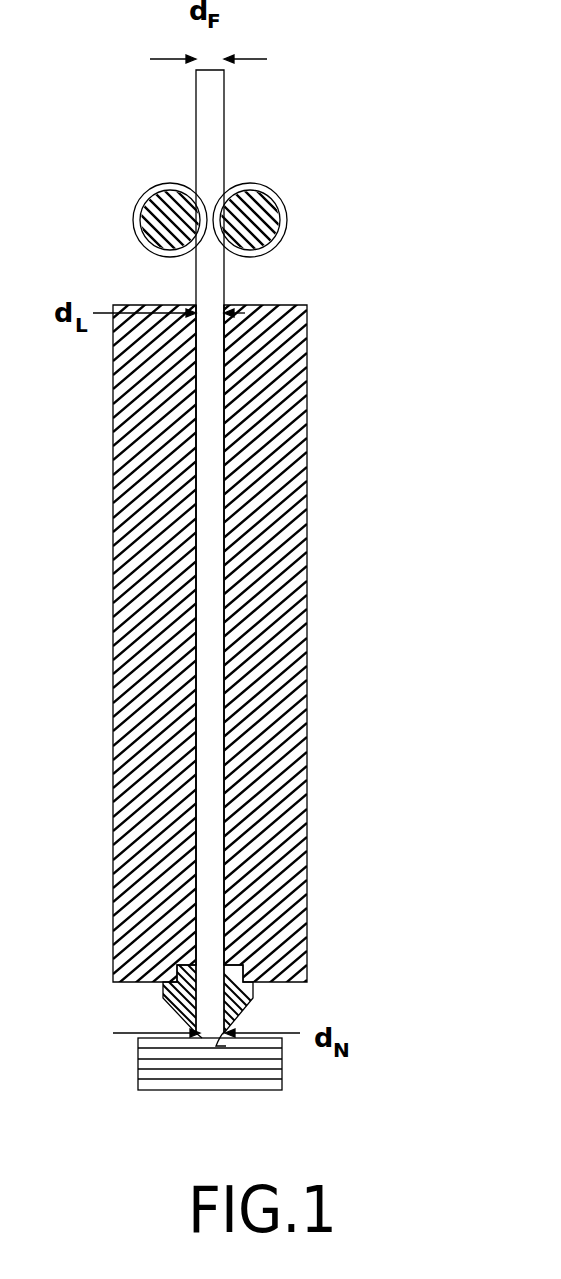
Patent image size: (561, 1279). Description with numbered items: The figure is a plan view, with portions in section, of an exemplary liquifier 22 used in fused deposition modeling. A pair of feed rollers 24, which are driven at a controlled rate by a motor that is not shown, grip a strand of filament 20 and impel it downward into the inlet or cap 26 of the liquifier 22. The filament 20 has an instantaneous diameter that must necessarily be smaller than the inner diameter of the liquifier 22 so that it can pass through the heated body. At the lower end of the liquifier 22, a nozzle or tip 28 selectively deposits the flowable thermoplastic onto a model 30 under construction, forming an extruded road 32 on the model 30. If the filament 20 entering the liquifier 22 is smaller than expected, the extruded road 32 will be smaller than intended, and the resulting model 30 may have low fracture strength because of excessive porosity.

The filament 20 is at (217, 152).
The liquifier 22 is at (280, 602).
The feed rollers 24 is at (247, 198).
The inlet or cap 26 is at (226, 305).
The nozzle or tip 28 is at (243, 1002).
The model 30 is at (282, 1057).
The extruded road 32 is at (200, 1033).